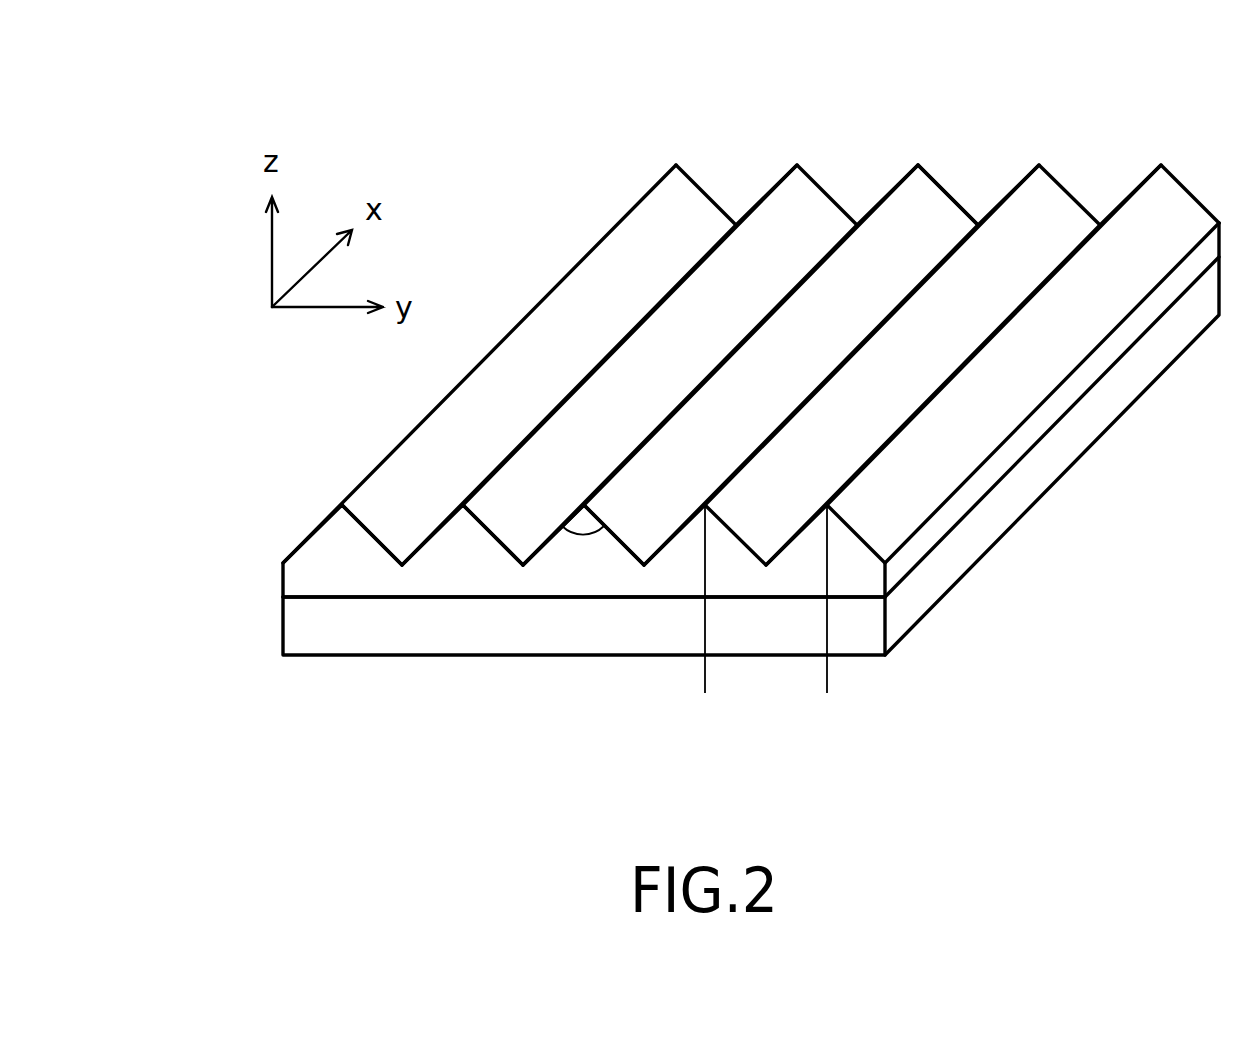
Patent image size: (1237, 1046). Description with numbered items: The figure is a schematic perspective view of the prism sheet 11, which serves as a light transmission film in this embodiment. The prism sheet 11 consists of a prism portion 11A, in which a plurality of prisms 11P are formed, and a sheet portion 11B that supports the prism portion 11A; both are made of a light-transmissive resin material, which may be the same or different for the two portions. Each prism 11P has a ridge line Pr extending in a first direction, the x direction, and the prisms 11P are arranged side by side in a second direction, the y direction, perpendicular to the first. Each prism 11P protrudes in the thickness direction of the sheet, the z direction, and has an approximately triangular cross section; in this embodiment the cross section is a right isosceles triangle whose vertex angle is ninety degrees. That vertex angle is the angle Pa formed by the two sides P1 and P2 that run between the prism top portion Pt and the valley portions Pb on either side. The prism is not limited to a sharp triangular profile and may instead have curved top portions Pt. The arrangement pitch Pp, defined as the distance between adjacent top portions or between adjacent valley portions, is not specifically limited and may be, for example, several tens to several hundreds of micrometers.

The prism sheet 11 is at (1187, 43).
The prism portion 11A is at (252, 500).
The sheet portion 11B is at (252, 600).
The prism 11P is at (810, 192).
The ridge line Pr is at (945, 258).
The valley portion Pb is at (402, 564).
The prism top portion Pt is at (464, 505).
The side P1 is at (548, 544).
The angle Pa is at (586, 535).
The side P2 is at (617, 538).
The arrangement pitch Pp is at (827, 680).